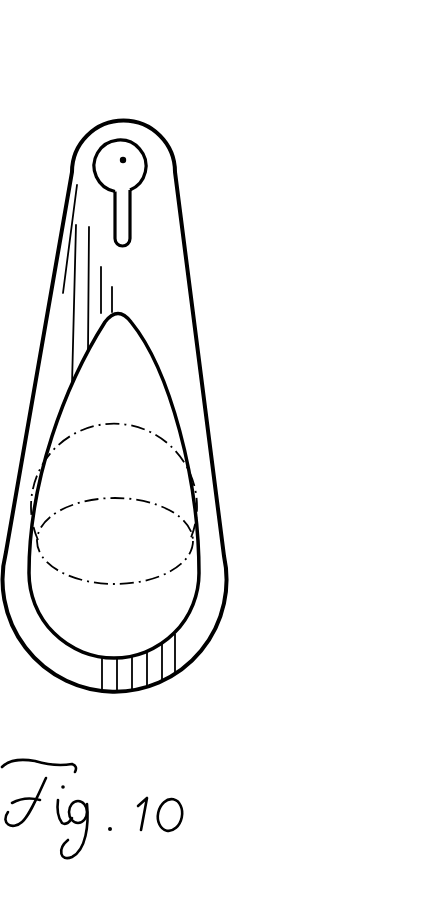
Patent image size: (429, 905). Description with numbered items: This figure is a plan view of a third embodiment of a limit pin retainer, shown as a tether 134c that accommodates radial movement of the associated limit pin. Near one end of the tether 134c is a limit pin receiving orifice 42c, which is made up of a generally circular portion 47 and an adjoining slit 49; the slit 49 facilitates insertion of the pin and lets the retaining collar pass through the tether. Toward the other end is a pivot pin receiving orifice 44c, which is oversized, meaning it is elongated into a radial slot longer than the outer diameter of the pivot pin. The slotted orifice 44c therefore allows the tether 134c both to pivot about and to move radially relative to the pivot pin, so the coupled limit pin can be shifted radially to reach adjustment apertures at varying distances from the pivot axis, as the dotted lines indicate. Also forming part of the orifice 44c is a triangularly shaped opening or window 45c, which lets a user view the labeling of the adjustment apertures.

The tether 134c is at (92, 110).
The generally circular portion 47 is at (123, 160).
The limit pin receiving orifice 42c is at (141, 176).
The slit 49 is at (123, 228).
The triangularly shaped opening or window 45c is at (172, 395).
The pivot pin receiving orifice 44c is at (185, 622).